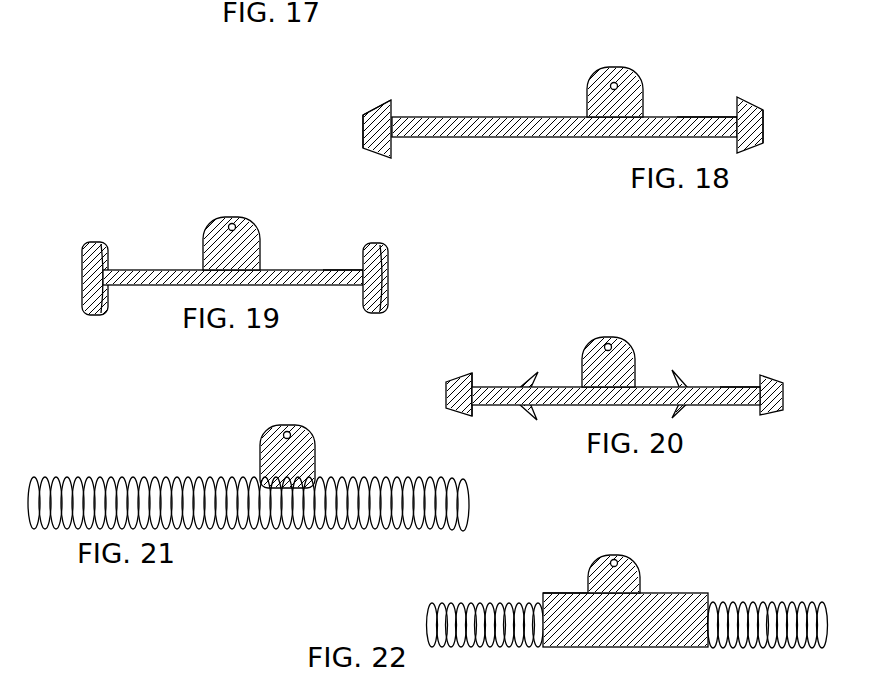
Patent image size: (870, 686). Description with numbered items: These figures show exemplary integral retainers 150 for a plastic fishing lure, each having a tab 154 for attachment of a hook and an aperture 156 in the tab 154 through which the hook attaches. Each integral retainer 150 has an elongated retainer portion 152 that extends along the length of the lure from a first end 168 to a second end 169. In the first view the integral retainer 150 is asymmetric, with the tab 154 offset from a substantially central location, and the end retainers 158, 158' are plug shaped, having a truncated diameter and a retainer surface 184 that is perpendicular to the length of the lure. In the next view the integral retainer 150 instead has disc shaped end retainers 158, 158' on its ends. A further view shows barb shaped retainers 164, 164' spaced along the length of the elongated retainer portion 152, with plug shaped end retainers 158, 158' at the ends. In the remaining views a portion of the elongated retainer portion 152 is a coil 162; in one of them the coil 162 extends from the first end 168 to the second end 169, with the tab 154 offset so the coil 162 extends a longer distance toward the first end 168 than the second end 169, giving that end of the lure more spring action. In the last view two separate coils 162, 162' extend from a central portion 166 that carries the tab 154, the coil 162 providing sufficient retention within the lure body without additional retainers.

In FIG. 18, the integral retainer 150 is at (533, 117).
In FIG. 19, the integral retainer 150 is at (173, 270).
In FIG. 20, the integral retainer 150 is at (568, 387).
In FIG. 21, the integral retainer 150 is at (193, 478).
In FIG. 22, the integral retainer 150 is at (545, 594).
In FIG. 18, the elongated retainer portion 152 is at (677, 117).
In FIG. 19, the elongated retainer portion 152 is at (323, 268).
In FIG. 20, the elongated retainer portion 152 is at (746, 385).
In FIG. 21, the elongated retainer portion 152 is at (372, 478).
In FIG. 22, the elongated retainer portion 152 is at (735, 607).
In FIG. 18, the tab 154 is at (641, 75).
In FIG. 19, the tab 154 is at (258, 226).
In FIG. 20, the tab 154 is at (636, 348).
In FIG. 21, the tab 154 is at (313, 434).
In FIG. 22, the tab 154 is at (640, 562).
In FIG. 18, the aperture 156 is at (607, 68).
In FIG. 19, the aperture 156 is at (217, 218).
In FIG. 20, the aperture 156 is at (607, 338).
In FIG. 21, the aperture 156 is at (283, 426).
In FIG. 18, the end retainer 158 is at (368, 94).
In FIG. 19, the end retainer 158 is at (87, 242).
In FIG. 20, the end retainer 158 is at (617, 349).
In FIG. 18, the end retainer 158' is at (764, 84).
In FIG. 19, the end retainer 158' is at (392, 246).
In FIG. 21, the coil 162 is at (116, 461).
In FIG. 22, the coil 162 is at (495, 588).
In FIG. 22, the coil 162' is at (773, 591).
In FIG. 20, the barb shaped retainer 164 is at (515, 371).
In FIG. 20, the barb shaped retainer 164' is at (693, 366).
In FIG. 22, the central portion 166 is at (660, 594).
In FIG. 18, the first end 168 is at (362, 130).
In FIG. 21, the first end 168 is at (33, 478).
In FIG. 22, the first end 168 is at (427, 627).
In FIG. 18, the second end 169 is at (763, 112).
In FIG. 21, the second end 169 is at (467, 492).
In FIG. 22, the second end 169 is at (810, 605).
In FIG. 18, the retainer surface 184 is at (393, 104).
In FIG. 19, the retainer surface 184 is at (110, 248).
In FIG. 20, the retainer surface 184 is at (474, 378).